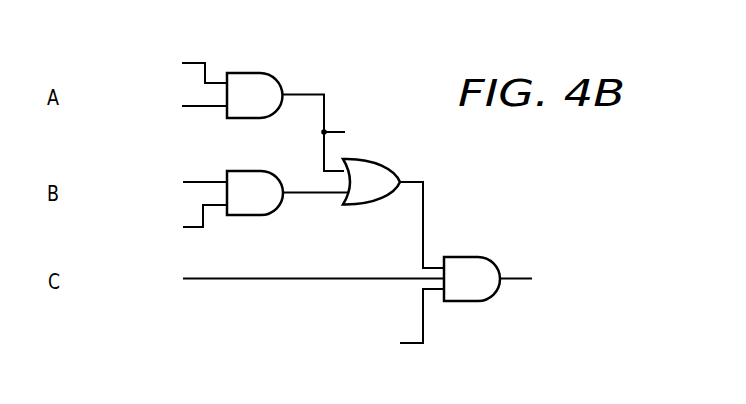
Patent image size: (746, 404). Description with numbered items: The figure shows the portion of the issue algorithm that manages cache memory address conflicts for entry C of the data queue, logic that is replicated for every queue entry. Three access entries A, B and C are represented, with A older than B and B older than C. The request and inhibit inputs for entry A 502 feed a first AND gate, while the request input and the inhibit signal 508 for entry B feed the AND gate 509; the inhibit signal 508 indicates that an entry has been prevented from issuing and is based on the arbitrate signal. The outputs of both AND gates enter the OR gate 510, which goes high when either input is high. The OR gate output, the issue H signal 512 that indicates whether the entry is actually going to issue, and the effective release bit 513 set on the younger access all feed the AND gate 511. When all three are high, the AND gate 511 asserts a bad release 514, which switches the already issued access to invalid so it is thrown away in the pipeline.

The request signal A (first AND gate input) 502 is at (88, 59).
The inhibit signal 508 is at (98, 227).
The AND gate 509 is at (267, 217).
The OR gate 510 is at (370, 158).
The AND gate 511 is at (472, 255).
The issue H signal 512 is at (128, 293).
The effective release bit 513 is at (305, 348).
The bad release bit 514 is at (573, 303).